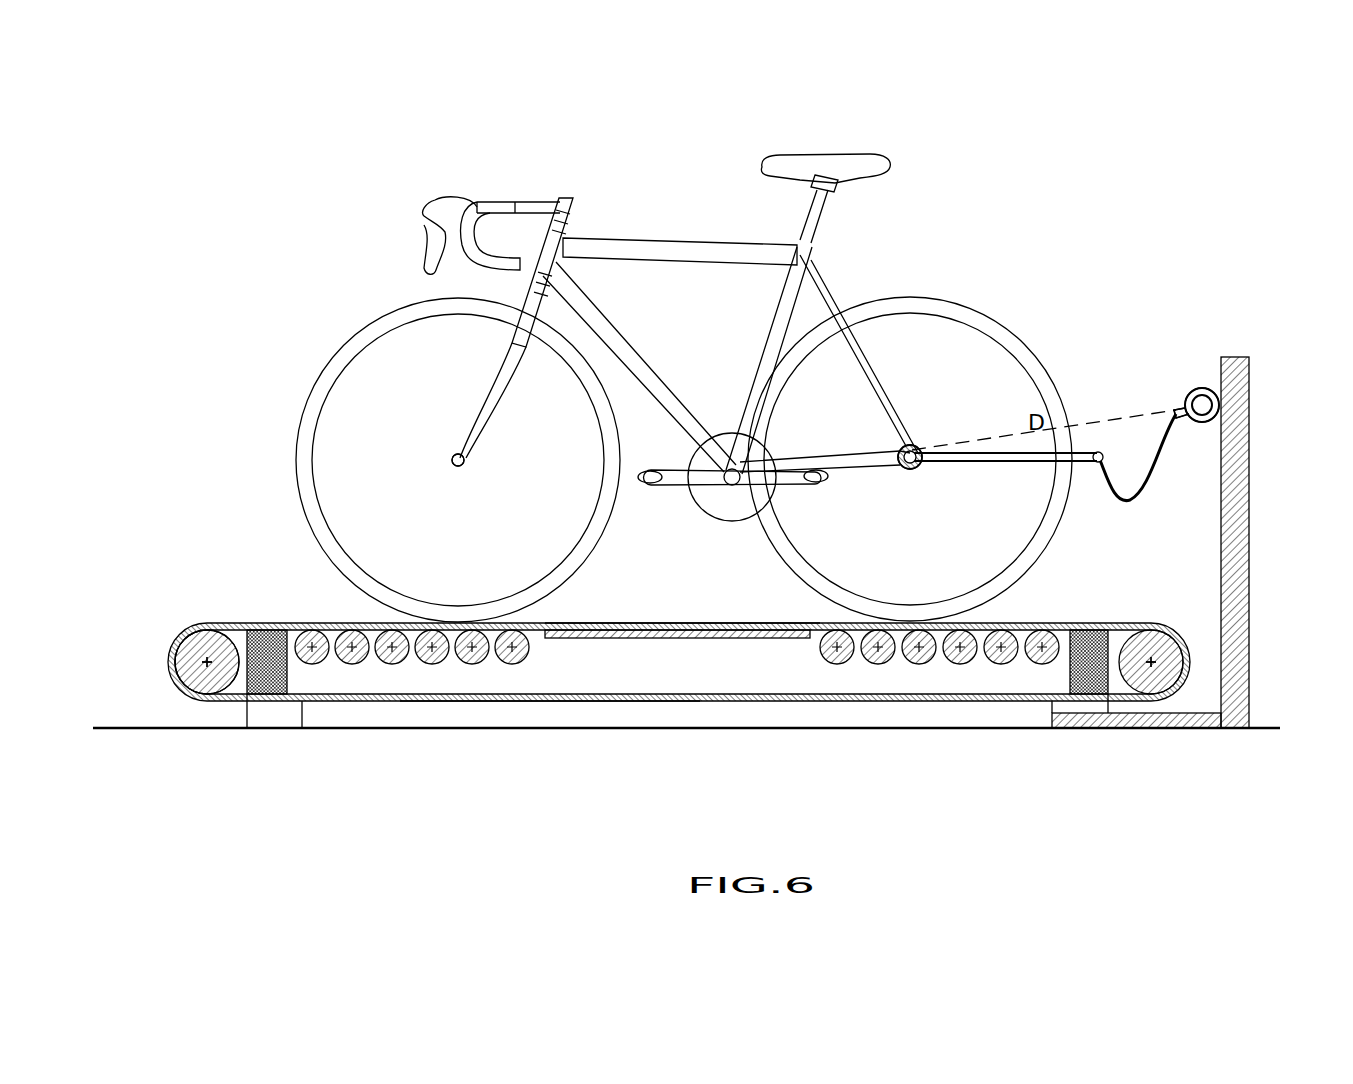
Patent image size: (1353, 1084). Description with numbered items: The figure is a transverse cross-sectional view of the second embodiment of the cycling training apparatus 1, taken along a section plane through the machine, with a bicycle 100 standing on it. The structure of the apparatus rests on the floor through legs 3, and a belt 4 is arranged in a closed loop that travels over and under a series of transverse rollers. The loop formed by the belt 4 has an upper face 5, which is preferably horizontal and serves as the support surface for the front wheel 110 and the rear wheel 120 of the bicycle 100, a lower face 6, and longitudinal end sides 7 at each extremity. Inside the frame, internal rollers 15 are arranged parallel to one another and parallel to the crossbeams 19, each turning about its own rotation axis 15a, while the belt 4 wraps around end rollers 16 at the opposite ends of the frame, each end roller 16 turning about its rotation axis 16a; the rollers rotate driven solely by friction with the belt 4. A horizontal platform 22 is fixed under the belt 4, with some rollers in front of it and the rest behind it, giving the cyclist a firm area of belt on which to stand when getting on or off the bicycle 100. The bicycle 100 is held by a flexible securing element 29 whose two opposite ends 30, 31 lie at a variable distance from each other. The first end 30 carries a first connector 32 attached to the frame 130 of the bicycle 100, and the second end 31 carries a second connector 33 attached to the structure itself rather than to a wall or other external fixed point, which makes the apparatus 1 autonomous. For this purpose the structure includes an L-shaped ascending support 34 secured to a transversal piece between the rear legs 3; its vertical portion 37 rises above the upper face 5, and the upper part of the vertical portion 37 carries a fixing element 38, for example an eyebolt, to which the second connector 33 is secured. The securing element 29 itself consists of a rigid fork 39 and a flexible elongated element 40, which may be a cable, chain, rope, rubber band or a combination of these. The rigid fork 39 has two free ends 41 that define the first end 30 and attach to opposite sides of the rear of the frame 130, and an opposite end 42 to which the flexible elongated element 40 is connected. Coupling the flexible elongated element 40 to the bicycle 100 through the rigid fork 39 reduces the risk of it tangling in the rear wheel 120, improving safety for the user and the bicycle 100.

The training apparatus 1 is at (166, 528).
The legs 3 is at (280, 715).
The belt 4 is at (674, 706).
The upper face 5 is at (684, 624).
The lower face 6 is at (545, 701).
The longitudinal end side 7 is at (168, 665).
The internal rollers 15 is at (368, 660).
The rotation axis 15a is at (352, 652).
The end rollers 16 is at (190, 680).
The rotation axis 16a is at (205, 660).
The crossbeams 19 is at (1070, 676).
The horizontal platform 22 is at (725, 640).
The securing element 29 is at (1143, 452).
The first end 30 is at (928, 446).
The second end 31 is at (1182, 384).
The first connector 32 is at (916, 443).
The second connector 33 is at (1186, 420).
The ascending support 34 is at (1252, 414).
The vertical portion 37 is at (1244, 605).
The fixing element 38 is at (1204, 387).
The rigid fork 39 is at (990, 463).
The flexible elongated element 40 is at (1152, 487).
The free ends 41 is at (895, 478).
The opposite end 42 is at (1093, 472).
The bicycle 100 is at (668, 232).
The front wheel 110 is at (343, 345).
The rear wheel 120 is at (950, 300).
The frame 130 is at (828, 290).